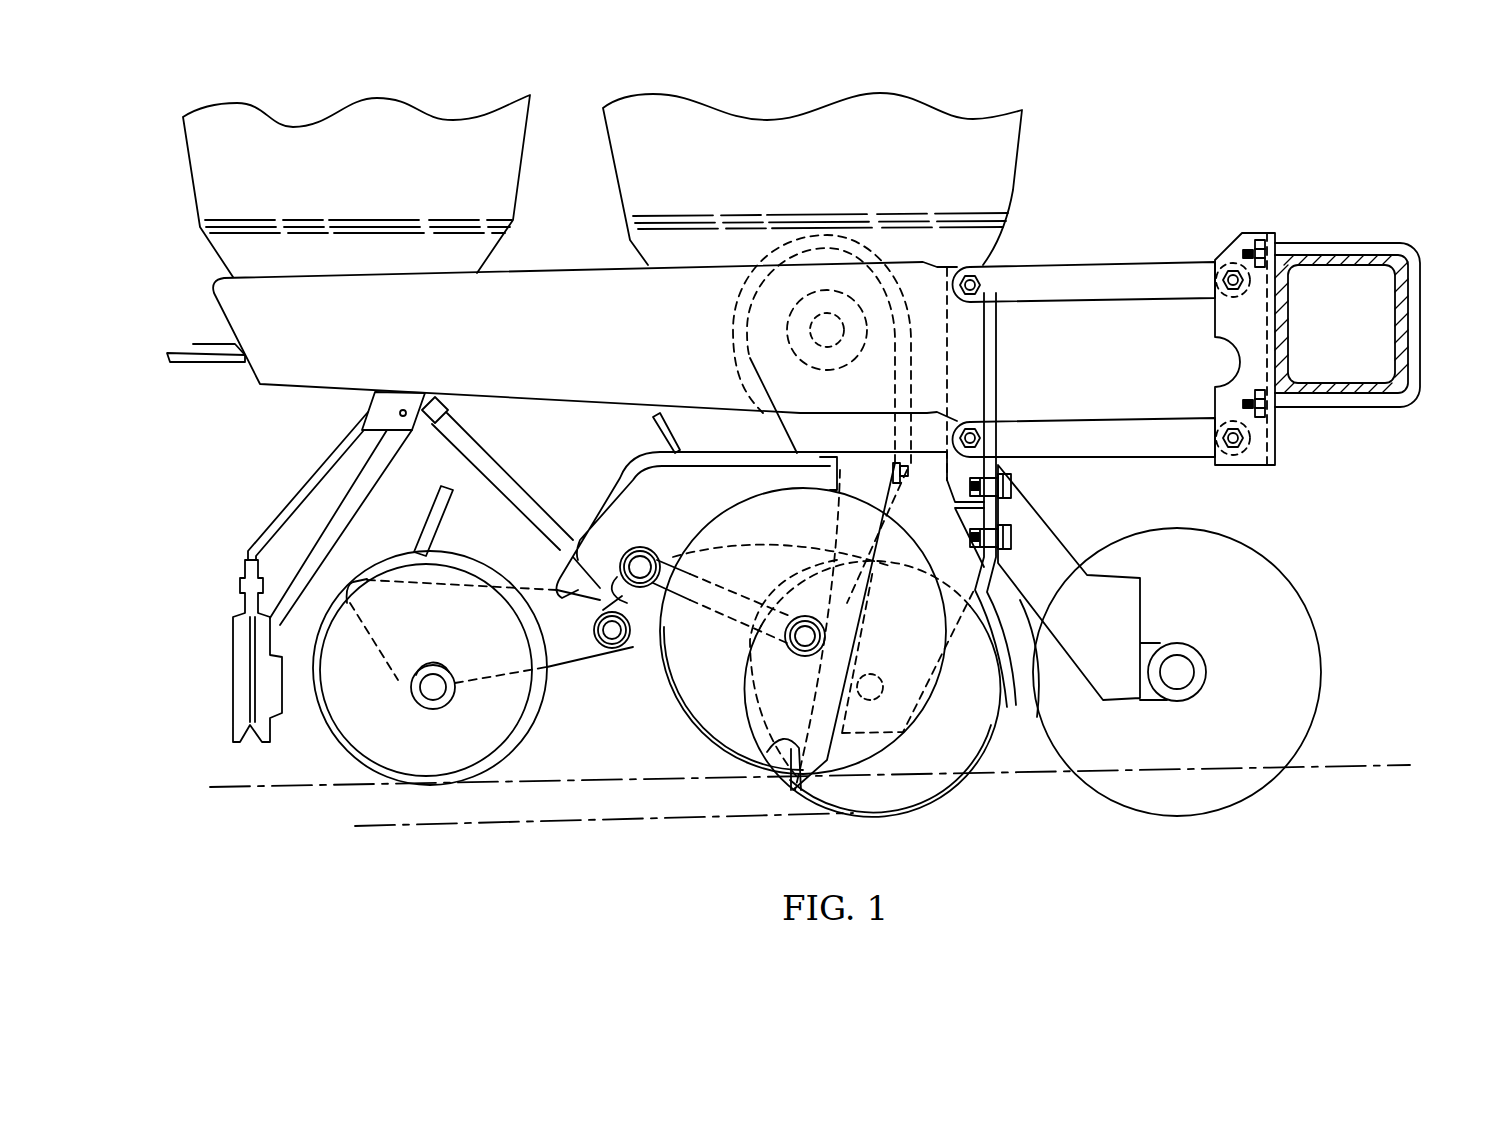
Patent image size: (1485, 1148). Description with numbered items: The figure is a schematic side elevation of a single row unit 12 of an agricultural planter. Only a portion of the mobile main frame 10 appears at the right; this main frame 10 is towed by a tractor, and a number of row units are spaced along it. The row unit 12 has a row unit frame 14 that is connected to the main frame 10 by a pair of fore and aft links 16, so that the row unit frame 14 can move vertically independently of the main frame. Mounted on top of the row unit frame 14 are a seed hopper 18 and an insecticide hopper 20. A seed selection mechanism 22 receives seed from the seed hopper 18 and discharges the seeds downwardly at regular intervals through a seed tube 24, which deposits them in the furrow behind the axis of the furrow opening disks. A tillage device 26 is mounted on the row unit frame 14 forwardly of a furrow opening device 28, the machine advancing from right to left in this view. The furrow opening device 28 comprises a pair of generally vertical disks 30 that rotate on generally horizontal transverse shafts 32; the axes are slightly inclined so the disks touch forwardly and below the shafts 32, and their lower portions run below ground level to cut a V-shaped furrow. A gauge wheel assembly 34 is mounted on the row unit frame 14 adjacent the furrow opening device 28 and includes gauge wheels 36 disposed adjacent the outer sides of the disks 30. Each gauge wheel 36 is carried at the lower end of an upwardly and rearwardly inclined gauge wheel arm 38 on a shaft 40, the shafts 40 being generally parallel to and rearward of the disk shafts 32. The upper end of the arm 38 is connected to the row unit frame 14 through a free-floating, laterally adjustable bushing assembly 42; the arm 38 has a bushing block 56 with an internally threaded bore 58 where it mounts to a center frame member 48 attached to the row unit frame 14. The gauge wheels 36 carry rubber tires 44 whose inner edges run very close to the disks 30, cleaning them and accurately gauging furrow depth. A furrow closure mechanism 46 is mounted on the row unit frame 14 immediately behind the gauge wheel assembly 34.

The main frame 10 is at (1340, 262).
The row unit 12 is at (721, 335).
The row unit frame 14 is at (449, 341).
The fore and aft links 16 is at (1156, 262).
The seed hopper 18 is at (808, 175).
The insecticide hopper 20 is at (344, 186).
The seed selection mechanism 22 is at (733, 330).
The seed tube 24 is at (757, 770).
The tillage device 26 is at (1297, 591).
The furrow opening device 28 is at (937, 792).
The furrow opening disks 30 is at (872, 707).
The disk shafts 32 is at (880, 674).
The gauge wheel assembly 34 is at (787, 651).
The gauge wheels 36 is at (707, 712).
The gauge wheel arms 38 is at (735, 592).
The gauge wheel shafts 40 is at (793, 652).
The bushing assembly 42 is at (657, 541).
The rubber tires 44 is at (672, 677).
The furrow closure mechanism 46 is at (340, 735).
The center frame member 48 is at (699, 501).
The bushing block 56 is at (618, 578).
The bore 58 is at (600, 611).